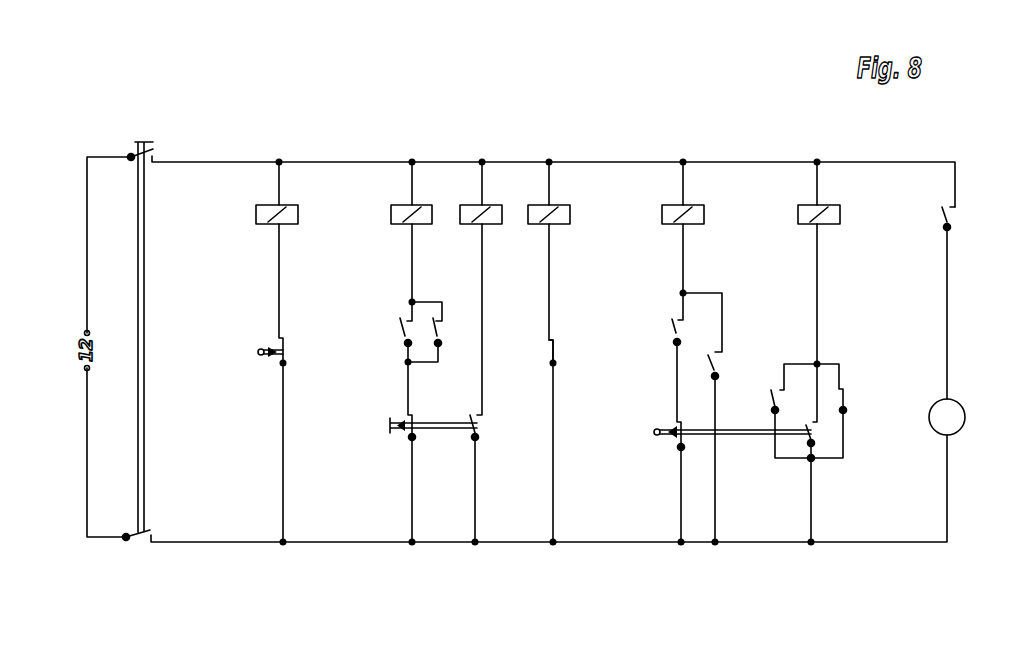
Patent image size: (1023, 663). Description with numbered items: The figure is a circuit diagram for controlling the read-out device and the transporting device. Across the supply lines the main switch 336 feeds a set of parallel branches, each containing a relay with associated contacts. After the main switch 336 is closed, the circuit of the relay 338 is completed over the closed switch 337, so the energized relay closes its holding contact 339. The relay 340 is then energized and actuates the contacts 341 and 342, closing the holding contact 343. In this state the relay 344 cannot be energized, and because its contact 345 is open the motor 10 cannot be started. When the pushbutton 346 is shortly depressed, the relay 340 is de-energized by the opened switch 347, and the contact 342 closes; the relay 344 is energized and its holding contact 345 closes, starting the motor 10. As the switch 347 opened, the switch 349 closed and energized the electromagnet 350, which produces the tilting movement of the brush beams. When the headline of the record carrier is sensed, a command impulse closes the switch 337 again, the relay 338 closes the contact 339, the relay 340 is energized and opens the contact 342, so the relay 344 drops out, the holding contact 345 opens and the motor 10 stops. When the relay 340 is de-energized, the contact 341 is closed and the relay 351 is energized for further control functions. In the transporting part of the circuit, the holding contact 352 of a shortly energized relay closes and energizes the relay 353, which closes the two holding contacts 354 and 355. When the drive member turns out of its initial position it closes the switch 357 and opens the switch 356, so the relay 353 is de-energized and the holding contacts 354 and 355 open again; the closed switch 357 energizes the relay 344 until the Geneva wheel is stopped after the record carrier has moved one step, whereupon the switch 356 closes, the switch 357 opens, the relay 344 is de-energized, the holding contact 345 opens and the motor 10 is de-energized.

The motor 10 is at (961, 410).
The main switch 336 is at (144, 138).
The switch 337 is at (259, 356).
The relay 338 is at (292, 208).
The holding contact 339 is at (398, 328).
The relay 340 is at (398, 208).
The contact 341 is at (556, 345).
The contact 342 is at (846, 398).
The holding contact 343 is at (440, 331).
The relay 344 is at (835, 208).
The holding contact 345 is at (951, 216).
The pushbutton 346 is at (391, 428).
The switch 347 is at (414, 422).
The switch 349 is at (478, 422).
The electromagnet 350 is at (495, 208).
The relay 351 is at (572, 208).
The holding contact 352 is at (715, 365).
The relay 353 is at (690, 208).
The holding contact 354 is at (668, 327).
The holding contact 355 is at (772, 400).
The switch 356 is at (654, 436).
The switch 357 is at (812, 437).